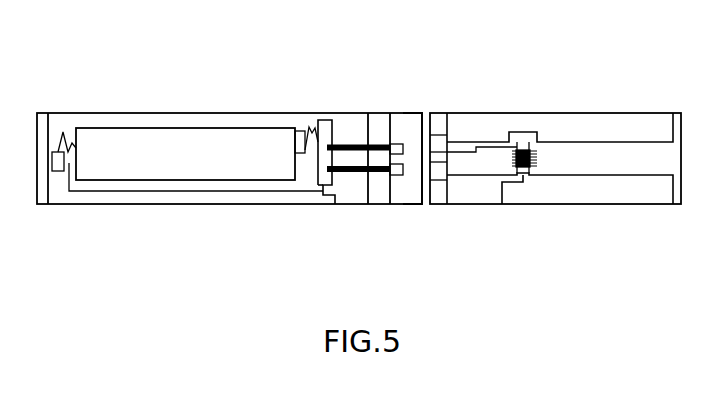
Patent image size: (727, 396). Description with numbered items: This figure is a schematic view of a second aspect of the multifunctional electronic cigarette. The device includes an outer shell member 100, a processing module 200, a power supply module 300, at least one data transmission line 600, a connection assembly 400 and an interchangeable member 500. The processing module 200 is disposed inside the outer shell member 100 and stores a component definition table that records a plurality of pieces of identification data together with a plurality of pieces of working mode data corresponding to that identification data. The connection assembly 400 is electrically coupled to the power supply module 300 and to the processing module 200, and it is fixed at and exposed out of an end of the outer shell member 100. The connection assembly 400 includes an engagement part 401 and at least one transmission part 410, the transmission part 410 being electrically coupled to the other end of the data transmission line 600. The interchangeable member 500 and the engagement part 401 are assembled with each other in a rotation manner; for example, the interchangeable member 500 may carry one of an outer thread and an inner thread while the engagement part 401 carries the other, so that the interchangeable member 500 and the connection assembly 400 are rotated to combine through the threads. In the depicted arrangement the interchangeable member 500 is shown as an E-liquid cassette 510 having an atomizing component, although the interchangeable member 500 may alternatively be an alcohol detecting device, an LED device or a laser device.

The outer shell member 100 is at (120, 204).
The processing module 200 is at (324, 120).
The power supply module 300 is at (187, 142).
The connection assembly 400 is at (395, 204).
The engagement part 401 is at (413, 204).
The transmission part 410 is at (395, 145).
The interchangeable member 500 is at (553, 113).
The E-liquid cassette 510 is at (601, 193).
The data transmission line 600 is at (358, 145).